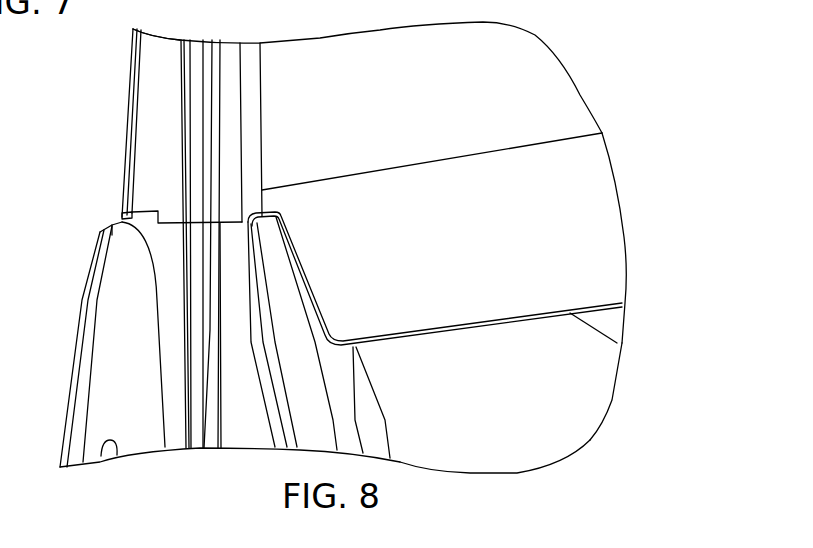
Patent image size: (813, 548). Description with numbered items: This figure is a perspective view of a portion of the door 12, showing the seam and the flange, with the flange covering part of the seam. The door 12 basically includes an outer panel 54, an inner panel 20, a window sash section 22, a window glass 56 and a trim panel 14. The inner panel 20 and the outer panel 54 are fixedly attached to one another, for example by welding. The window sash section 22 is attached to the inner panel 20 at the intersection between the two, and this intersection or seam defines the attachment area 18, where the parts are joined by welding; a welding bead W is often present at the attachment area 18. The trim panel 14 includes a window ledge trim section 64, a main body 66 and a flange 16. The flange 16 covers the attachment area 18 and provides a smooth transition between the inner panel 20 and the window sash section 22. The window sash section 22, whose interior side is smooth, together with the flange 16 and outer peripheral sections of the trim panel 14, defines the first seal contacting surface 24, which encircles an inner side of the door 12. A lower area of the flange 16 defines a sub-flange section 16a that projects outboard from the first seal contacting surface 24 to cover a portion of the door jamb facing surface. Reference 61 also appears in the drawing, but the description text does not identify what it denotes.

The door 12 is at (94, 133).
The trim panel 14 is at (603, 430).
The flange 16 is at (272, 245).
The sub-flange section 16a is at (260, 298).
The attachment area 18 is at (233, 228).
The inner panel 20 is at (246, 415).
The window sash section 22 is at (250, 78).
The first seal contacting surface 24 is at (310, 396).
The outer panel 54 is at (160, 56).
The window glass 56 is at (380, 80).
The rib 61 is at (210, 395).
The window ledge trim section 64 is at (573, 180).
The main body 66 is at (524, 444).
The welding bead W is at (233, 218).